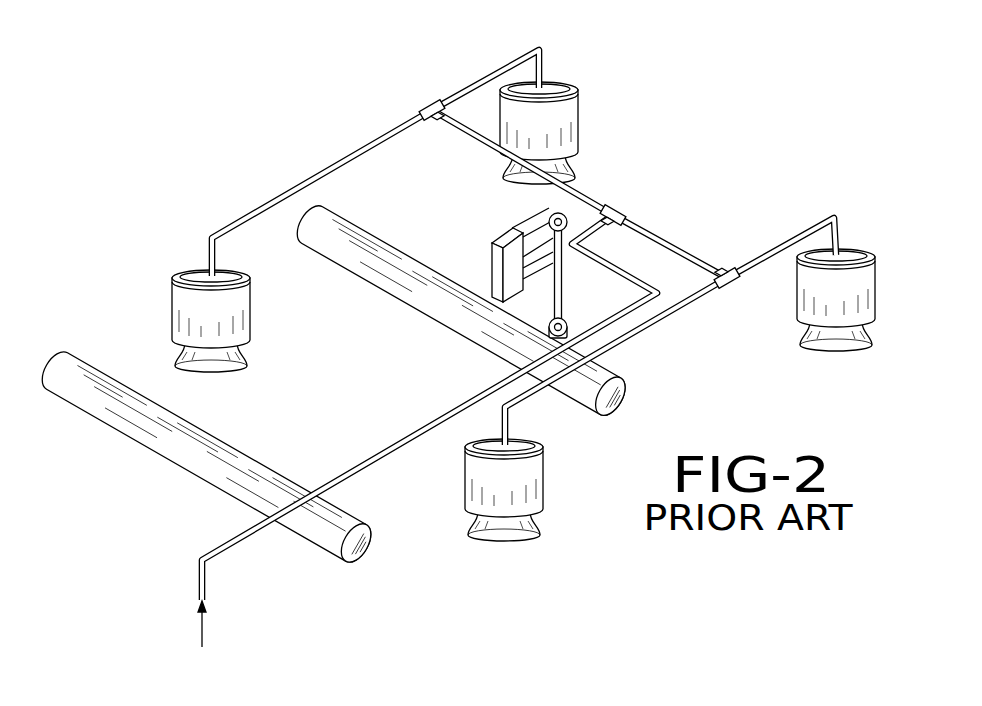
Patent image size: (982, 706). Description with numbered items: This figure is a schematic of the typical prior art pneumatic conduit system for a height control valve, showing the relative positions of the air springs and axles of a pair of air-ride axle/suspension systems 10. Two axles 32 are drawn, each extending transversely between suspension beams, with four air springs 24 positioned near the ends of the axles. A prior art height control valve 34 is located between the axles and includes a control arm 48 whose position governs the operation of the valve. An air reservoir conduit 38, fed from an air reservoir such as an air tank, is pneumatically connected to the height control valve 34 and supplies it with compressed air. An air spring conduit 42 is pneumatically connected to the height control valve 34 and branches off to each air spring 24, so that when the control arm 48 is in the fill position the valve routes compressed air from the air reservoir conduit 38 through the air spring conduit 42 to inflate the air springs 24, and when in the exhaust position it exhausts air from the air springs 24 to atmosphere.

The air-ride axle/suspension system 10 is at (285, 120).
The air spring 24 is at (580, 122).
The axle 32 is at (423, 316).
The height control valve 34 is at (489, 233).
The air reservoir conduit 38 is at (417, 432).
The air spring conduit 42 is at (482, 79).
The control arm 48 is at (538, 218).